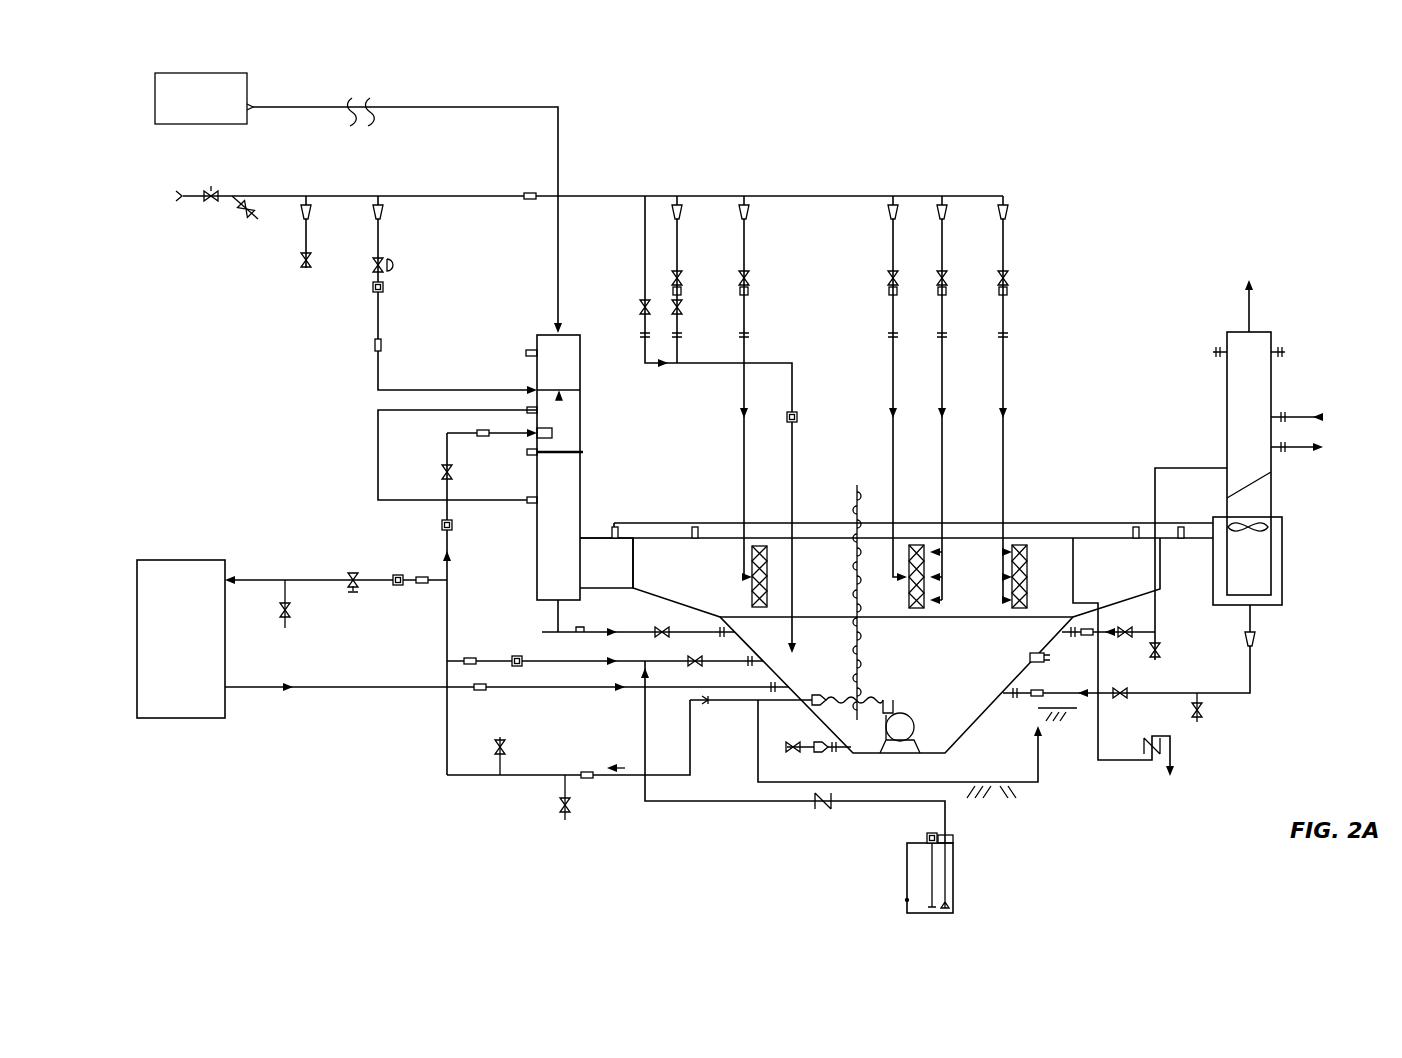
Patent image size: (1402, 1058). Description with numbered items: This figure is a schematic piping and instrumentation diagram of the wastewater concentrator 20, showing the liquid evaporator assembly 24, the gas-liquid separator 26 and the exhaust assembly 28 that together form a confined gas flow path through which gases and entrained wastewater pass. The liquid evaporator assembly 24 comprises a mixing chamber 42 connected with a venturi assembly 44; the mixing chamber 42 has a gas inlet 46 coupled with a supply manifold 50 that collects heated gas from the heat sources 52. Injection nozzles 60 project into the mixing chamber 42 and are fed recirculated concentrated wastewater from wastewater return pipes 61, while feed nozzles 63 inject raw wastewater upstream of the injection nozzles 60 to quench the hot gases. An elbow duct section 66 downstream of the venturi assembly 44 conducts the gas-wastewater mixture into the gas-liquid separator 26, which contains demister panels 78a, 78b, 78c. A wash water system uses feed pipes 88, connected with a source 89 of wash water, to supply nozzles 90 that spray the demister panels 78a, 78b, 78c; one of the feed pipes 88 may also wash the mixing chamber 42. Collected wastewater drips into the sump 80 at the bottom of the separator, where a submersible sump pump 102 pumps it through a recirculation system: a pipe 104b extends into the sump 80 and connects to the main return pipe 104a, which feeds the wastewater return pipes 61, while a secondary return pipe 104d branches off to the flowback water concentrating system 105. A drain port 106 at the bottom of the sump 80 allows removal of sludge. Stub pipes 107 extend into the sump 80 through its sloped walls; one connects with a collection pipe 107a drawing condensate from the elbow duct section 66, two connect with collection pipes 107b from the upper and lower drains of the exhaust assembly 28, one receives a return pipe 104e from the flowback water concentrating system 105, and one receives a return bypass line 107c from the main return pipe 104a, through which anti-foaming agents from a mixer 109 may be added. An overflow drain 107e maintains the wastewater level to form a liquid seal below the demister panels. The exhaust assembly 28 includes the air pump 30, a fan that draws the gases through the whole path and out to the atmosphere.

The wastewater concentrator 20 is at (1146, 258).
The liquid evaporator assembly 24 is at (582, 423).
The gas-liquid separator 26 is at (1031, 538).
The exhaust assembly 28 is at (1272, 370).
The air pump 30 is at (1262, 526).
The mixing chamber 42 is at (597, 415).
The venturi assembly 44 is at (567, 458).
The gas inlet 46 is at (583, 370).
The supply manifold 50 is at (500, 107).
The heat sources 52 is at (249, 82).
The injection nozzles 60 is at (554, 433).
The wastewater return pipes 61 is at (462, 438).
The feed nozzles 63 is at (562, 397).
The elbow duct section 66 is at (537, 553).
The demister panel 78a is at (768, 563).
The demister panel 78b is at (915, 545).
The demister panel 78c is at (1028, 584).
The sump 80 is at (858, 754).
The feed pipes 88 is at (443, 196).
The source of wash water 89 is at (165, 196).
The nozzles 90 is at (749, 580).
The submersible sump pump 102 is at (905, 750).
The main return pipe 104a is at (447, 734).
The pipe 104b is at (779, 702).
The secondary return pipe 104d is at (275, 580).
The return pipe 104e is at (313, 690).
The flowback water concentrating system 105 is at (180, 560).
The drain port 106 is at (818, 753).
The stub pipes 107 is at (733, 633).
The collection pipe 107a is at (633, 632).
The collection pipes 107b is at (1160, 609).
The return bypass line 107c is at (627, 661).
The overflow drain 107e is at (1076, 604).
The mixer 109 is at (955, 892).